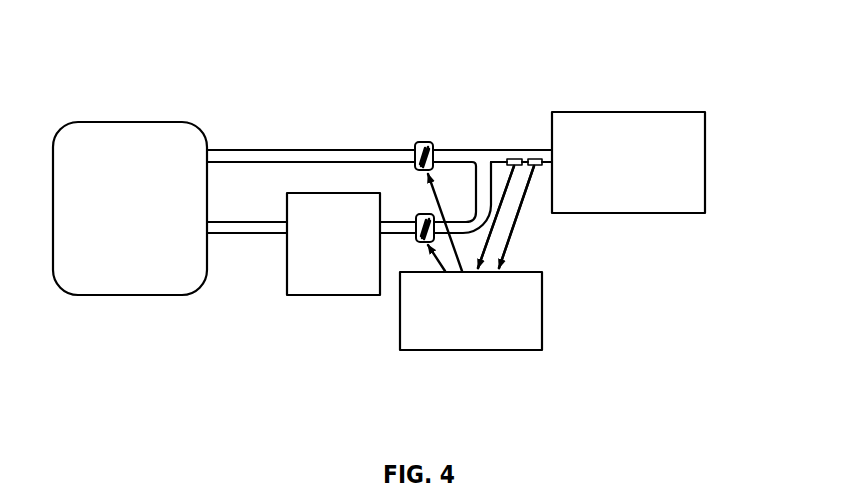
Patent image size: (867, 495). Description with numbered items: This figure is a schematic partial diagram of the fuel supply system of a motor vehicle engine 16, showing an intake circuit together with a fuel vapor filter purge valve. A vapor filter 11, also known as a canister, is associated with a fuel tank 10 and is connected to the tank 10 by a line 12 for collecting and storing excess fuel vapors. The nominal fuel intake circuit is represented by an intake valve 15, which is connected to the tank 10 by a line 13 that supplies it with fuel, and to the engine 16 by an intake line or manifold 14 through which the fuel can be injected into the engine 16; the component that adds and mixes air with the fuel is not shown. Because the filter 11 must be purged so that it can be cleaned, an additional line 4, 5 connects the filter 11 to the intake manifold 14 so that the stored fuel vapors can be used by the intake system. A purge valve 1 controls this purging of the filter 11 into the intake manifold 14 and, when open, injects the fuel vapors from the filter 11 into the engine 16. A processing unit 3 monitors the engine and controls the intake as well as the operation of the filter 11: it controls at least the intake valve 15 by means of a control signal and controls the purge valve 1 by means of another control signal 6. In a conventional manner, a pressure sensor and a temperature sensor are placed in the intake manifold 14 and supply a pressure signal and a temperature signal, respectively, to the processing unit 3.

The purge valve 1 is at (423, 244).
The processing unit 3 is at (530, 337).
The additional line 4 is at (398, 221).
The additional line 5 is at (458, 234).
The control signal 6 is at (440, 273).
The fuel tank 10 is at (155, 120).
The vapor filter 11 is at (327, 296).
The line 12 is at (236, 234).
The line 13 is at (297, 151).
The intake manifold 14 is at (553, 120).
The intake valve 15 is at (420, 141).
The engine 16 is at (662, 123).